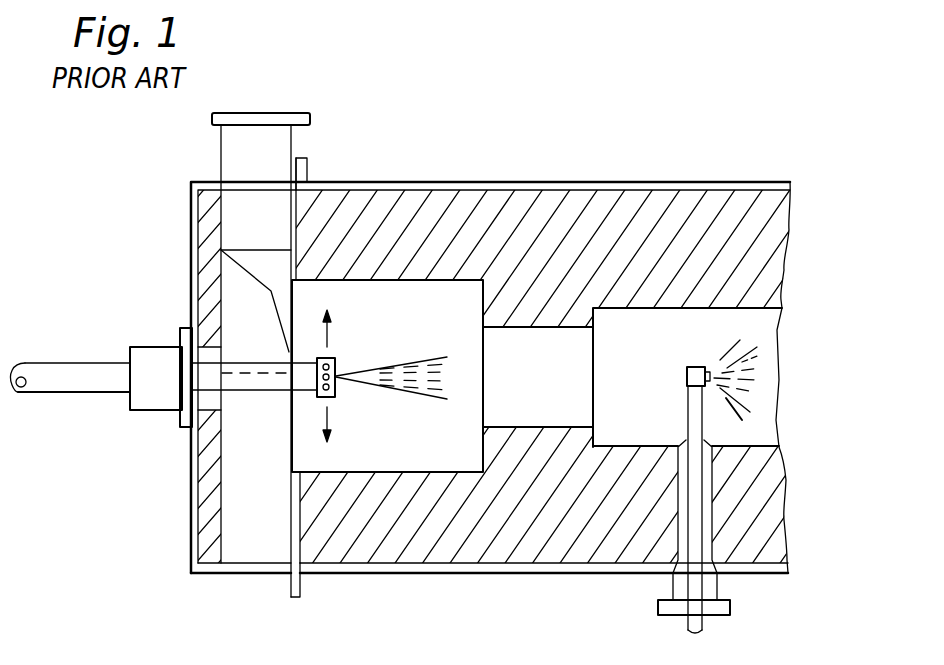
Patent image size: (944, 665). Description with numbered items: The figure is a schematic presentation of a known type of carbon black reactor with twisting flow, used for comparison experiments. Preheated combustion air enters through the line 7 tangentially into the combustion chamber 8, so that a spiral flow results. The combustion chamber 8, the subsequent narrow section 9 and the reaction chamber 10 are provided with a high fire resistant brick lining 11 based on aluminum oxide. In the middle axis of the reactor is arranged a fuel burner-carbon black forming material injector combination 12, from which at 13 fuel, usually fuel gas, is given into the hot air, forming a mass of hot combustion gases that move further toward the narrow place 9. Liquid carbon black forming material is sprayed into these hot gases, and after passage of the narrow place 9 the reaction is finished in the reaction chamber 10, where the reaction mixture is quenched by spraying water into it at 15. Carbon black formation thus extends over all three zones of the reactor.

The line 7 is at (285, 141).
The combustion chamber 8 is at (378, 452).
The narrow section 9 is at (528, 398).
The reaction chamber 10 is at (643, 348).
The brick lining 11 is at (470, 200).
The fuel burner-carbon black forming material injector combination 12 is at (257, 386).
The fuel inlet point 13 is at (331, 357).
The water quench point 15 is at (730, 364).